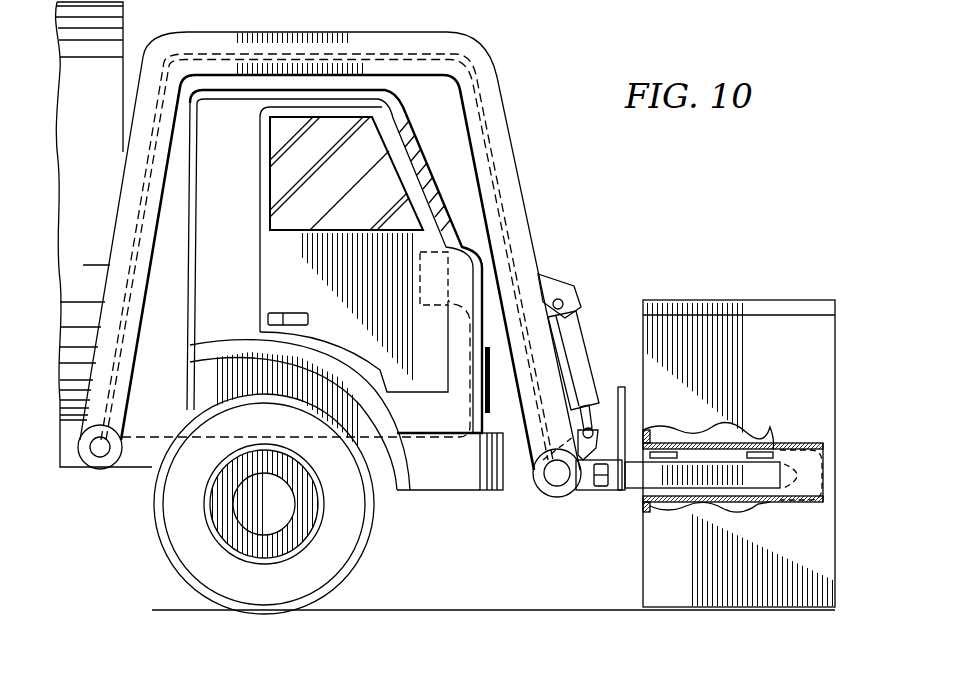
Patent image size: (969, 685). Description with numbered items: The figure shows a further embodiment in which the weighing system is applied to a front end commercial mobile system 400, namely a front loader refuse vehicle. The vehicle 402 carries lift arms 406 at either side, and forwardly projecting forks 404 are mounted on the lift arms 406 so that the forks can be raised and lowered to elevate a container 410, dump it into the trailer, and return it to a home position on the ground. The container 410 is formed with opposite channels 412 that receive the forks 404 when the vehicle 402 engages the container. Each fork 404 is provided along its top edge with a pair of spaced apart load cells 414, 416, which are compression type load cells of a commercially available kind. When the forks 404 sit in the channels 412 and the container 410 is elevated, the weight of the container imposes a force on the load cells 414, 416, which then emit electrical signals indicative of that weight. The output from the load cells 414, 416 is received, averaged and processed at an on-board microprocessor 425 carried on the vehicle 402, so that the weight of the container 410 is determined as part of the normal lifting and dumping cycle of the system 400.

The front end commercial mobile system 400 is at (508, 60).
The vehicle 402 is at (103, 186).
The forks 404 is at (637, 495).
The lift arms 406 is at (490, 122).
The container 410 is at (757, 360).
The channels 412 is at (787, 502).
The load cell 414 is at (667, 452).
The load cell 416 is at (757, 452).
The on-board microprocessor 425 is at (418, 288).